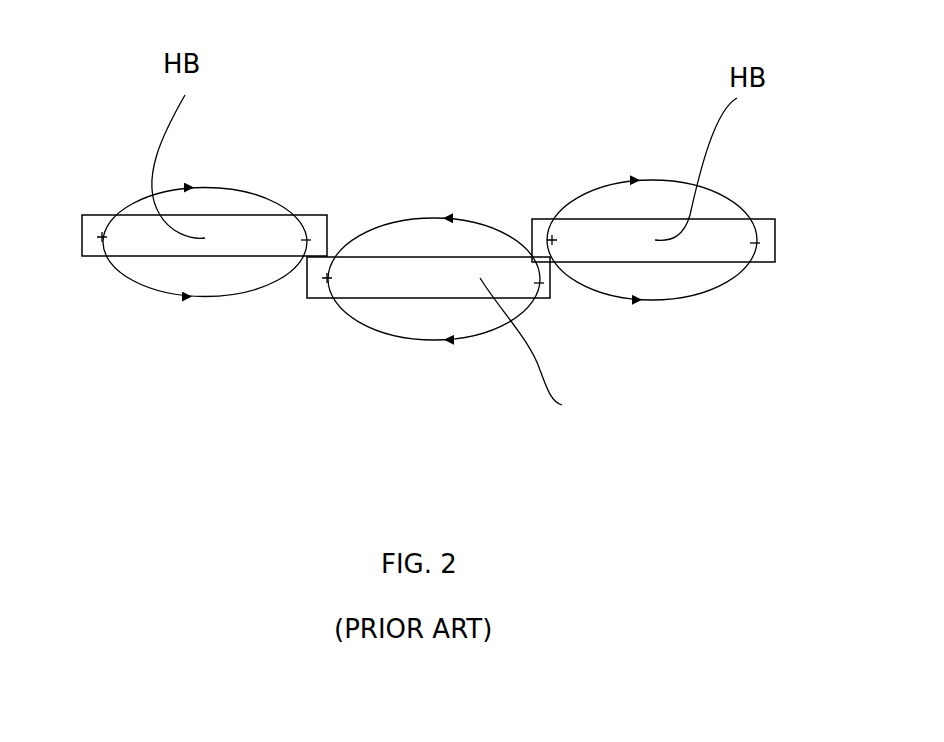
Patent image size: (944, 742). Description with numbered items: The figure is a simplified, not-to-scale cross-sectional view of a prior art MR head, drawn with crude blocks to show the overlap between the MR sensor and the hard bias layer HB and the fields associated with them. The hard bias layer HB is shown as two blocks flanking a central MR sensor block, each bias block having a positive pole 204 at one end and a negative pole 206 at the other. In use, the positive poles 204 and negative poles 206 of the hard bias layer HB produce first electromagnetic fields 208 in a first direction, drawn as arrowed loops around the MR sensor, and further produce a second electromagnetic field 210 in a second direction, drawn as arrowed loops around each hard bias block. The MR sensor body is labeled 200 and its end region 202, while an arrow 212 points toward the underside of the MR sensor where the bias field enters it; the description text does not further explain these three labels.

The MR sensor 200 is at (306, 297).
The MR sensor end 202 is at (552, 280).
The positive poles 204 is at (82, 237).
The negative poles 206 is at (330, 257).
The first electromagnetic fields 208 is at (440, 212).
The second electromagnetic field 210 is at (207, 187).
The flux into MR sensor 212 is at (317, 310).